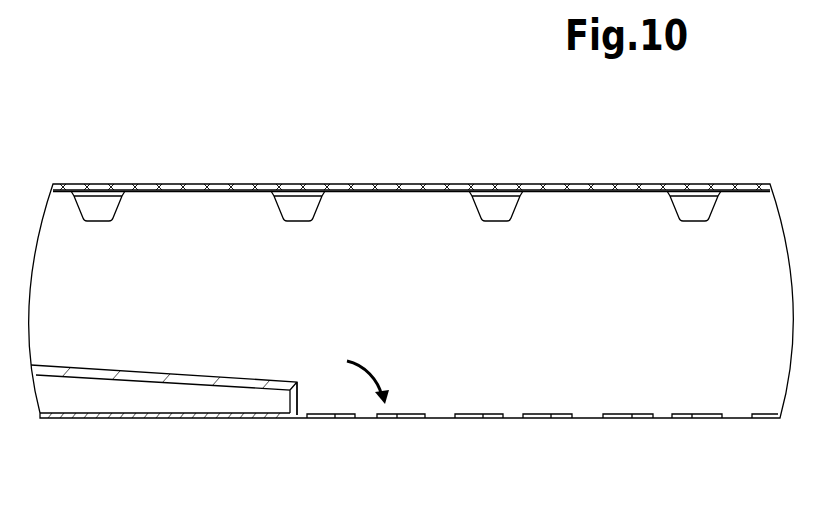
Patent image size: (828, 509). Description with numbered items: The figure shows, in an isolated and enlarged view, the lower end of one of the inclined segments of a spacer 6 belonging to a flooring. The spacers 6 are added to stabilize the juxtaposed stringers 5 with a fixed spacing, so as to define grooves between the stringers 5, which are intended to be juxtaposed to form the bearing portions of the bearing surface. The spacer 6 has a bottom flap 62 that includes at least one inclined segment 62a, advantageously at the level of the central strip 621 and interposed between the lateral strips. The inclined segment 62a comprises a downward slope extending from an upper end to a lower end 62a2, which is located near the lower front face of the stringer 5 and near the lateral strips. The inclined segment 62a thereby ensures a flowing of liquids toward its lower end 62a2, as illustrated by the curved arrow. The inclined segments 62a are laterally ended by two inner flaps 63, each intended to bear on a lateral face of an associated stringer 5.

The stringer 5 is at (358, 205).
The spacer 6 is at (164, 349).
The central strip 621 is at (164, 349).
The bottom flap 62 is at (164, 349).
The inclined segment 62a is at (155, 315).
The lower end 62a2 is at (299, 380).
The inner flap 63 is at (73, 395).